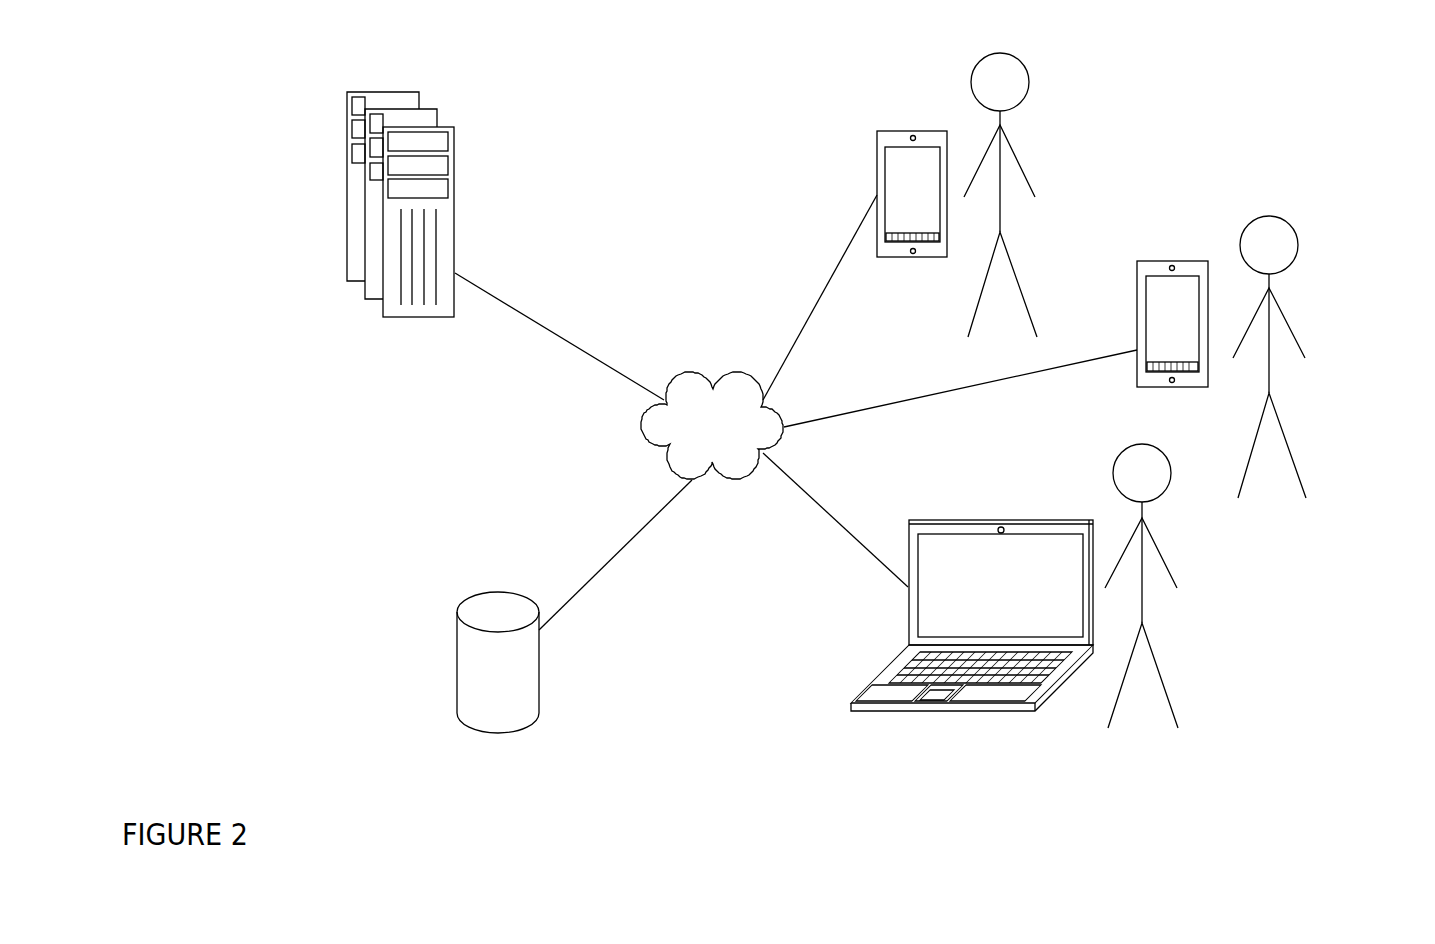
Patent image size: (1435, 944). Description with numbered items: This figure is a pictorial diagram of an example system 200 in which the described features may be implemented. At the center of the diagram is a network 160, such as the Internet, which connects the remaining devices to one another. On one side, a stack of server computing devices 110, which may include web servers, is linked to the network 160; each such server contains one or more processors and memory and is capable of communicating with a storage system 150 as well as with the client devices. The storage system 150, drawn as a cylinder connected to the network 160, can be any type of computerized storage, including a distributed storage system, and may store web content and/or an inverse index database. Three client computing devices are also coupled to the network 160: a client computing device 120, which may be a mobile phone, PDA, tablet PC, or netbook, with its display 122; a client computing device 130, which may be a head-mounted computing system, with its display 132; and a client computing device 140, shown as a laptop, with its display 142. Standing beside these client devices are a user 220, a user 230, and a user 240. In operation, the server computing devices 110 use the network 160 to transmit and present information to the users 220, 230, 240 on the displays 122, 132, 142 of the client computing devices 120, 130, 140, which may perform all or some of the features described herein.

The system environment 200 is at (202, 790).
The server computing device 110 is at (455, 170).
The client computing device 120 is at (858, 194).
The display 122 is at (877, 192).
The client computing device 130 is at (1137, 308).
The display 132 is at (1145, 375).
The client computing device 140 is at (947, 615).
The display 142 is at (915, 628).
The storage system 150 is at (542, 683).
The network 160 is at (712, 425).
The user 220 is at (1033, 183).
The user 230 is at (1303, 347).
The user 240 is at (1172, 577).